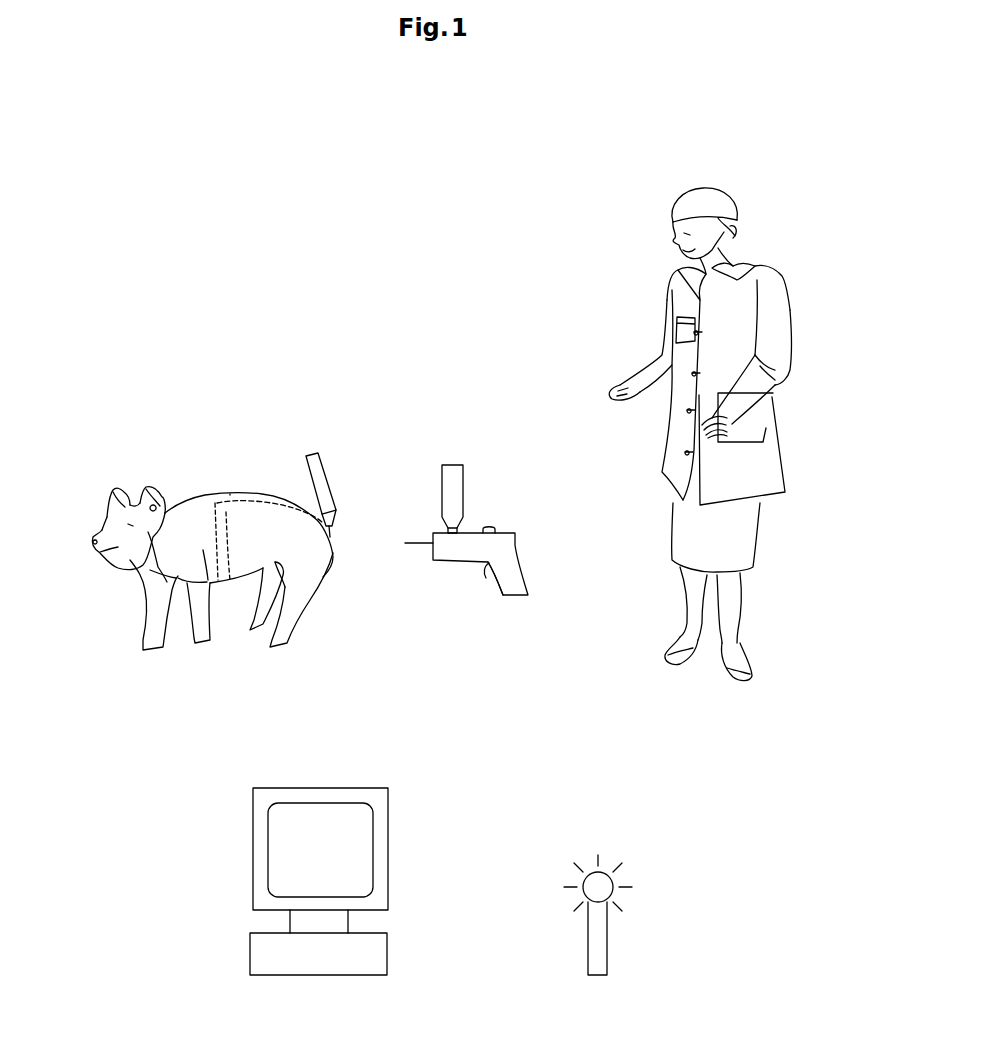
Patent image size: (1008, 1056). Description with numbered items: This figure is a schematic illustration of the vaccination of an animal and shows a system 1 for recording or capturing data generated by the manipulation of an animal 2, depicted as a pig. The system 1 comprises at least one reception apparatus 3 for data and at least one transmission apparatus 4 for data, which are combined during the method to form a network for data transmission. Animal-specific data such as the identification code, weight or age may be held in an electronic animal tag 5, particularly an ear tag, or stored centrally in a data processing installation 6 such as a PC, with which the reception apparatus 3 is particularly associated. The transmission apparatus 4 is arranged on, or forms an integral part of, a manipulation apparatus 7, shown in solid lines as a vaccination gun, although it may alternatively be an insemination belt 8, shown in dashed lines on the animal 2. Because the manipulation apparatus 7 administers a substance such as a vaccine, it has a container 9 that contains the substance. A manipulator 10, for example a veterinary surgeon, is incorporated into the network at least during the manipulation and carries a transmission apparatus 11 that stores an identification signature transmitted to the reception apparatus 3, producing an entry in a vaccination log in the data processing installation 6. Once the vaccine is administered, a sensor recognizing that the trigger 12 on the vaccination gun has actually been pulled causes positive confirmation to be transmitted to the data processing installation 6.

The system 1 is at (265, 418).
The animal 2 is at (115, 595).
The reception apparatus 3 is at (668, 872).
The transmission apparatus 4 is at (489, 523).
The animal tag 5 is at (150, 502).
The data processing installation 6 is at (220, 832).
The manipulation apparatus 7 is at (466, 559).
The insemination belt 8 is at (214, 490).
The container 9 is at (327, 455).
The manipulator 10 is at (795, 243).
The transmission apparatus 11 is at (775, 412).
The trigger 12 is at (483, 575).